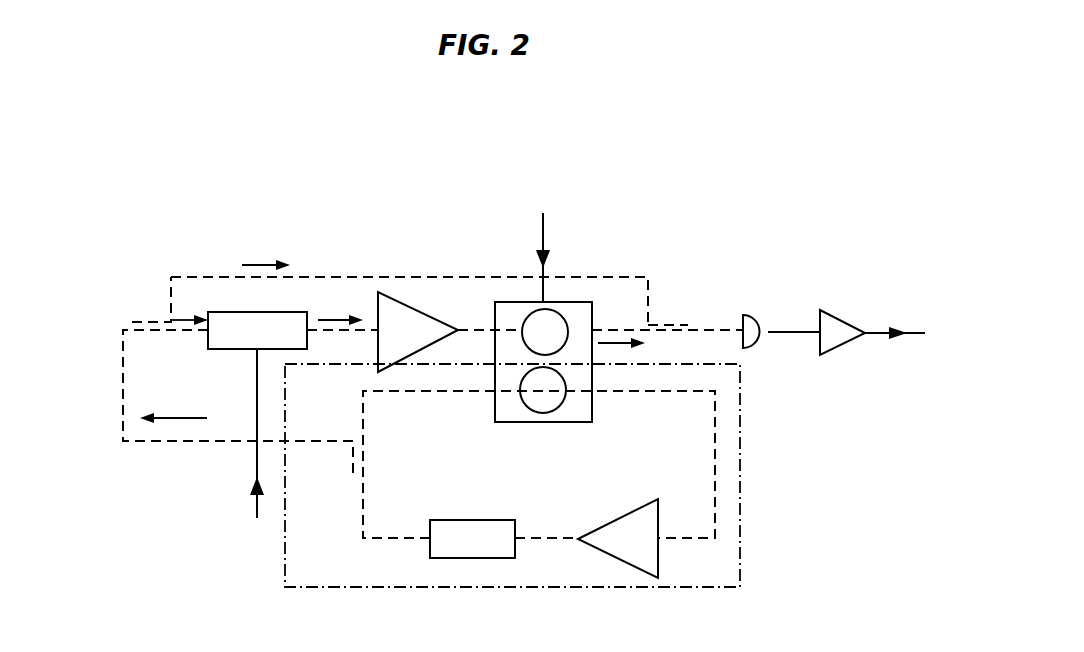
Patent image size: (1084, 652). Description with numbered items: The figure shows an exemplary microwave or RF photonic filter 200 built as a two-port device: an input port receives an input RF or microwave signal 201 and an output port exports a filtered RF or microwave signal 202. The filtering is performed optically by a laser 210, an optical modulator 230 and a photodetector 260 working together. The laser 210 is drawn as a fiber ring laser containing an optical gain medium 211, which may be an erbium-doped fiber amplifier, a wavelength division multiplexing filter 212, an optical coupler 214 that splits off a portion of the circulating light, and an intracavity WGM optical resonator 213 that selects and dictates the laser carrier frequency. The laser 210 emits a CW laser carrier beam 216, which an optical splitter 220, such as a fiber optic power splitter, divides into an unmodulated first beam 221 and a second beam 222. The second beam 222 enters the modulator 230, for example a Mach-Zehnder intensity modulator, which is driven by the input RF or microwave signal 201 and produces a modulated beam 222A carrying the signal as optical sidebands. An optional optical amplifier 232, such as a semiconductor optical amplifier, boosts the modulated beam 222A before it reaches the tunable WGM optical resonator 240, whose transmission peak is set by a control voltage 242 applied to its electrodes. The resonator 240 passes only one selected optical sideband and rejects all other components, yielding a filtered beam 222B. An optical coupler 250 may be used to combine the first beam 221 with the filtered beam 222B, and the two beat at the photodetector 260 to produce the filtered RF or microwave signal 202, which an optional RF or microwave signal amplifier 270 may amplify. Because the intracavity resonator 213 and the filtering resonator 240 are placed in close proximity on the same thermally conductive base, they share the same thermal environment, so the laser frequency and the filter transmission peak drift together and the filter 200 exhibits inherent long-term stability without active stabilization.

The microwave or RF photonic filter 200 is at (338, 146).
The input RF or microwave signal 201 is at (257, 497).
The filtered RF or microwave signal 202 is at (898, 371).
The laser 210 is at (740, 435).
The optical gain medium 211 is at (655, 510).
The wavelength division multiplexing filter 212 is at (517, 523).
The intracavity WGM optical resonator 213 is at (543, 410).
The optical coupler 214 is at (363, 455).
The CW laser carrier beam 216 is at (173, 420).
The optical splitter 220 is at (155, 321).
The first beam 221 is at (250, 262).
The second beam 222 is at (182, 322).
The modulated beam 222A is at (337, 320).
The filtered beam 222B is at (613, 343).
The optical modulator 230 is at (268, 313).
The optical amplifier 232 is at (400, 317).
The tunable WGM optical resonator 240 is at (567, 323).
The control voltage 242 is at (543, 243).
The optical coupler 250 is at (670, 322).
The photodetector 260 is at (759, 363).
The RF or microwave signal amplifier 270 is at (833, 304).